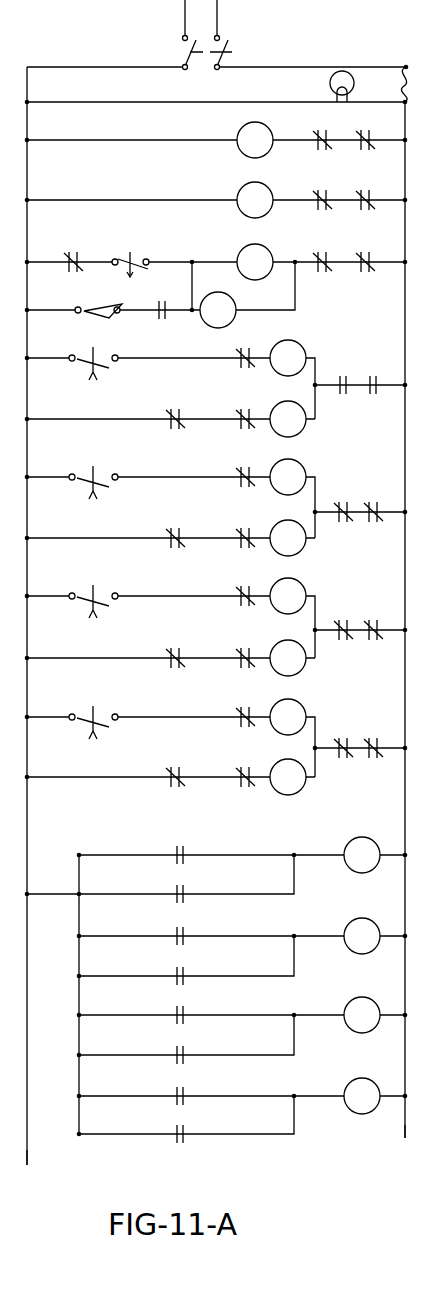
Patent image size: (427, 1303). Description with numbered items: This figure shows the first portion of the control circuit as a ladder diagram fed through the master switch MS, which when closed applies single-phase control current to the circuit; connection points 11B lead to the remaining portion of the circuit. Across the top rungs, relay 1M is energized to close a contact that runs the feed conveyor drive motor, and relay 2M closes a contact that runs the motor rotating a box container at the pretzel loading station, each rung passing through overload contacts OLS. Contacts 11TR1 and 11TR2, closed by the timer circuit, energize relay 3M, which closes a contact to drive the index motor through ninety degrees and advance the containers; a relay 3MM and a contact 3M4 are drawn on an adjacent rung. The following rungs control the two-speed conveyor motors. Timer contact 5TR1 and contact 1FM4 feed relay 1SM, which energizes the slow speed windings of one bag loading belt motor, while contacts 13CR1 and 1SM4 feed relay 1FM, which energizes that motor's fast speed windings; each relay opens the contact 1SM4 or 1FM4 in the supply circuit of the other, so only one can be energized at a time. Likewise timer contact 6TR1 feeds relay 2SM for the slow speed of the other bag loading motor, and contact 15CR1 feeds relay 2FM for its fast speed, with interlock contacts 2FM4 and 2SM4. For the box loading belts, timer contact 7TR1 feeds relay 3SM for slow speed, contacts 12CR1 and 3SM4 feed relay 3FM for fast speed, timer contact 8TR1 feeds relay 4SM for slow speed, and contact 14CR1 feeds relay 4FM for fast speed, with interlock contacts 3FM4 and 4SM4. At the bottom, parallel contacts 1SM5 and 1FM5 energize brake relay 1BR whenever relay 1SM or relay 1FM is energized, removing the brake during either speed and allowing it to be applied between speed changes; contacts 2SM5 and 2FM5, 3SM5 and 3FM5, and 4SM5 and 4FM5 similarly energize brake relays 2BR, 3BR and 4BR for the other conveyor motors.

The master switch MS is at (220, 35).
The overload switch contacts OLS is at (348, 434).
The relay 1M is at (255, 140).
The relay 2M is at (255, 200).
The relay 3M is at (255, 262).
The motor starter coil 3MM is at (218, 310).
The contact 11TR1 is at (66, 251).
The contact 11TR2 is at (136, 254).
The contact 3M4 is at (162, 300).
The contact 5TR1 is at (92, 357).
The contact 1FM4 is at (241, 350).
The relay 1SM is at (288, 358).
The contact 13CR1 is at (160, 409).
The contact 1SM4 is at (236, 409).
The relay 1FM is at (288, 419).
The contact 6TR1 is at (93, 475).
The contact 2FM4 is at (233, 468).
The relay 2SM is at (288, 477).
The contact 15CR1 is at (160, 528).
The contact 2SM4 is at (235, 528).
The relay 2FM is at (288, 538).
The contact 7TR1 is at (93, 594).
The contact 3FM4 is at (231, 588).
The relay 3SM is at (288, 596).
The contact 12CR1 is at (161, 648).
The contact 3SM4 is at (236, 648).
The relay 3FM is at (288, 658).
The contact 8TR1 is at (91, 715).
The contact 4SM4 is at (232, 738).
The relay 4SM is at (288, 717).
The contact 14CR1 is at (161, 768).
The relay 4FM is at (288, 777).
The contact 1SM5 is at (204, 851).
The contact 1FM5 is at (202, 890).
The contact 2SM5 is at (205, 932).
The contact 2FM5 is at (203, 972).
The contact 3SM5 is at (204, 1011).
The contact 3FM5 is at (203, 1051).
The contact 4SM5 is at (204, 1092).
The contact 4FM5 is at (201, 1130).
The brake relay 1BR is at (362, 855).
The brake coil 2BR is at (362, 936).
The brake coil 3BR is at (362, 1015).
The brake coil 4BR is at (362, 1096).
The connection to FIG. 11B is at (216, 1151).